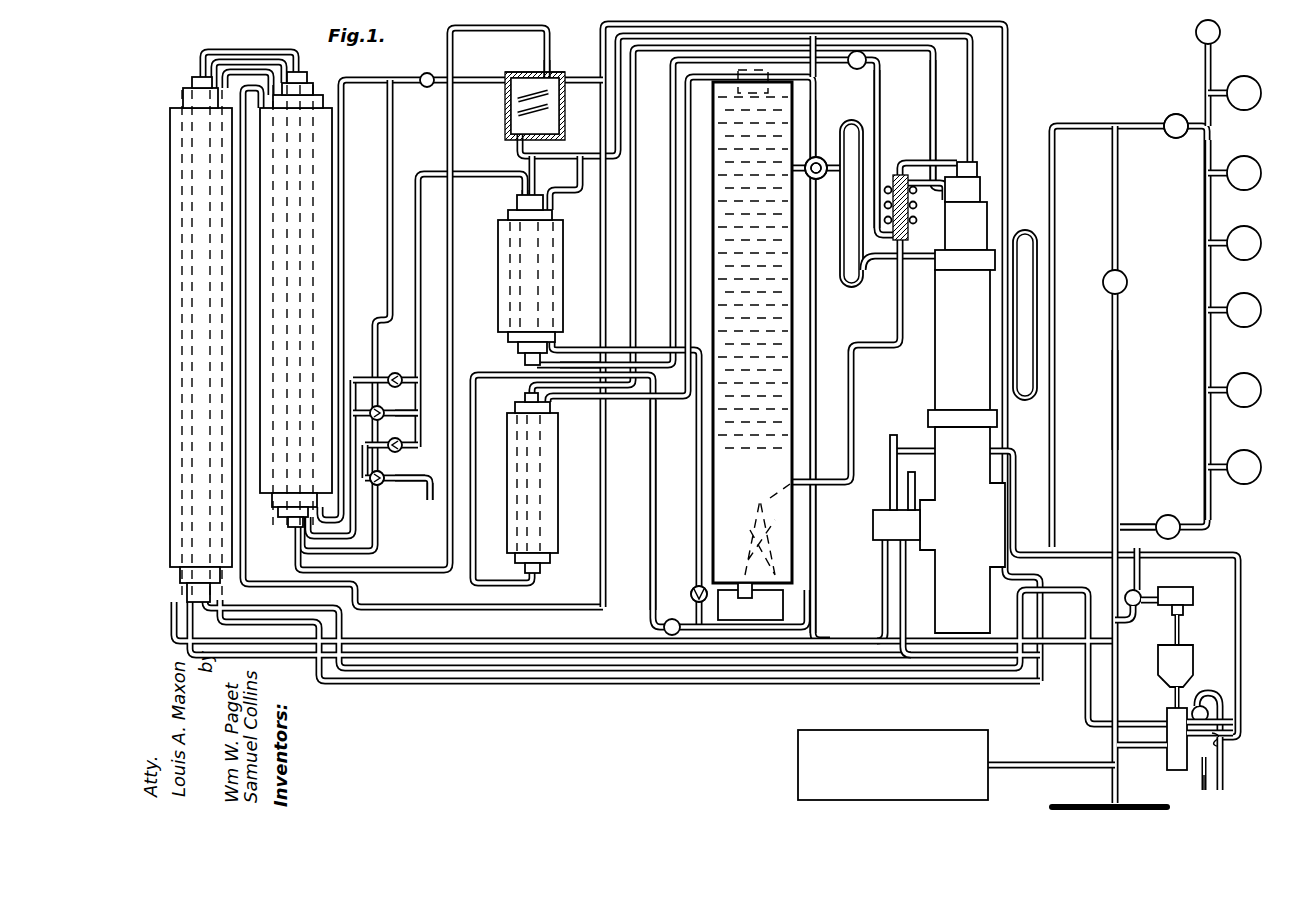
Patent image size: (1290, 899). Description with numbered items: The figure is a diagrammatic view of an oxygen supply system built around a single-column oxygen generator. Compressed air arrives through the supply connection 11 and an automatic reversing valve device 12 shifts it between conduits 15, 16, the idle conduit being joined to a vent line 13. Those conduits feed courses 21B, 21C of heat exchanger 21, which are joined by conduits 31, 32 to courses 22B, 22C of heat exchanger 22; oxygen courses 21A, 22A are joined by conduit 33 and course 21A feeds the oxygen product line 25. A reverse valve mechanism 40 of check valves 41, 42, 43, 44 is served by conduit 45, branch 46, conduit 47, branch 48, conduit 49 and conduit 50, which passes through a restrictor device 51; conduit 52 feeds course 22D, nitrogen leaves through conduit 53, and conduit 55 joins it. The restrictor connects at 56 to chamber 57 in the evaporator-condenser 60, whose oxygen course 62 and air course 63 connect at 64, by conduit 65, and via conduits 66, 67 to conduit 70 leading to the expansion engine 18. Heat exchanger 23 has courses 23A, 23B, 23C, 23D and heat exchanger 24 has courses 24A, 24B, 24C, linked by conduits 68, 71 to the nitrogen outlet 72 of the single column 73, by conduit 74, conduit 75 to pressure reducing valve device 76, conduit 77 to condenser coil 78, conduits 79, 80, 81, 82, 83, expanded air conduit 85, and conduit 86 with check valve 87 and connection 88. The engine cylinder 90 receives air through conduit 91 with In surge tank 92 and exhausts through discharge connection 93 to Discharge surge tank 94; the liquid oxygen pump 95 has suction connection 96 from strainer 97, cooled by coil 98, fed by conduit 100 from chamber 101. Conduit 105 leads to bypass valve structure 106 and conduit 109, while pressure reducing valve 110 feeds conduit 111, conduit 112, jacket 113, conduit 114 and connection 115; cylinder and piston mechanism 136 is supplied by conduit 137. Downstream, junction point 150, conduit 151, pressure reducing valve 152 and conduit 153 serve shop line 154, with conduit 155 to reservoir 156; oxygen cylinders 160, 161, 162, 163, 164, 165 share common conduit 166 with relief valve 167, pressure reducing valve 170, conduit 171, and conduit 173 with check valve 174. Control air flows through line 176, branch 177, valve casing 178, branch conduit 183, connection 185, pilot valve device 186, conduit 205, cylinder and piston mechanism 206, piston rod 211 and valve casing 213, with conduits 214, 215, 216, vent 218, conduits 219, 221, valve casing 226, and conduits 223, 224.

The supply connection 11 is at (889, 448).
The automatic reversing valve device 12 is at (870, 532).
The vent line 13 is at (907, 485).
The conduit 15 is at (882, 584).
The conduit 16 is at (905, 605).
The expansion engine 18 is at (935, 428).
The heat exchanger 21 is at (168, 341).
The oxygen product course 21A is at (208, 260).
The course 21B is at (190, 165).
The course 21C is at (180, 388).
The heat exchanger 22 is at (332, 230).
The oxygen product course 22A is at (295, 260).
The course 22B is at (312, 150).
The course 22C is at (312, 193).
The course 22D is at (322, 297).
The heat exchanger 23 is at (497, 276).
The central course 23A is at (536, 228).
The course 23B is at (518, 250).
The course 23C is at (510, 298).
The outer course 23D is at (550, 318).
The heat exchanger 24 is at (558, 533).
The central course 24A is at (540, 435).
The intermediate course 24B is at (530, 452).
The outer course 24C is at (520, 480).
The oxygen product line 25 is at (463, 683).
The conduit 31 is at (268, 68).
The conduit 32 is at (252, 64).
The conduit 33 is at (230, 45).
The reverse valve mechanism 40 is at (402, 490).
The check valve 41 is at (376, 485).
The check valve 42 is at (397, 476).
The check valve 43 is at (391, 437).
The check valve 44 is at (395, 373).
The conduit 45 is at (362, 551).
The branch 46 is at (369, 450).
The conduit 47 is at (340, 538).
The branch 48 is at (385, 404).
The conduit 49 is at (406, 410).
The conduit 50 is at (431, 485).
The restrictor device 51 is at (427, 73).
The conduit 52 is at (368, 83).
The conduit 53 is at (421, 270).
The conduit 55 is at (411, 464).
The connection 56 is at (510, 78).
The chamber 57 is at (540, 82).
The evaporator-condenser 60 is at (565, 130).
The oxygen conducting course 62 is at (516, 113).
The air conducting course 63 is at (518, 125).
The connection 64 is at (516, 99).
The conduit 65 is at (548, 45).
The conduit 66 is at (247, 570).
The conduit 67 is at (580, 77).
The conduit 68 is at (474, 375).
The conduit 70 is at (600, 42).
The conduit 71 is at (634, 398).
The nitrogen outlet 72 is at (738, 82).
The single column 73 is at (796, 332).
The conduit 74 is at (580, 188).
The conduit 75 is at (650, 504).
The pressure reducing valve device 76 is at (663, 628).
The conduit 77 is at (750, 601).
The condenser coil 78 is at (745, 540).
The conduit 79 is at (528, 185).
The conduit 80 is at (420, 573).
The conduit 81 is at (636, 296).
The conduit 82 is at (743, 616).
The conduit 83 is at (672, 216).
The expanded air conduit 85 is at (520, 200).
The conduit 86 is at (696, 452).
The check valve 87 is at (693, 588).
The connection 88 is at (692, 599).
The cylinder 90 is at (985, 230).
The conduit 91 is at (998, 262).
The In surge tank 92 is at (1036, 332).
The discharge connection 93 is at (924, 262).
The Discharge surge tank 94 is at (845, 272).
The liquid oxygen pump 95 is at (975, 162).
The suction connection 96 is at (912, 162).
The strainer 97 is at (908, 205).
The coil 98 is at (913, 224).
The conduit 100 is at (898, 342).
The condenser-unit-enclosing chamber 101 is at (795, 500).
The conduit 105 is at (834, 175).
The bypass valve structure 106 is at (830, 160).
The conduit 109 is at (806, 160).
The pressure reducing valve 110 is at (858, 52).
The conduit 111 is at (879, 108).
The conduit 112 is at (935, 180).
The jacket 113 is at (960, 190).
The conduit 114 is at (935, 115).
The connection 115 is at (800, 80).
The cylinder and piston mechanism 136 is at (818, 162).
The conduit 137 is at (816, 400).
The junction point 150 is at (1116, 125).
The conduit 151 is at (1112, 197).
The pressure reducing valve 152 is at (1125, 276).
The conduit 153 is at (1120, 400).
The shop line 154 is at (1068, 804).
The conduit 155 is at (1033, 758).
The reservoir 156 is at (905, 735).
The oxygen cylinder 160 is at (1248, 75).
The oxygen cylinder 161 is at (1248, 155).
The oxygen cylinder 162 is at (1248, 225).
The oxygen cylinder 163 is at (1248, 297).
The oxygen cylinder 164 is at (1250, 373).
The oxygen cylinder 165 is at (1248, 448).
The common conduit 166 is at (1205, 345).
The relief valve 167 is at (1196, 34).
The pressure reducing valve 170 is at (1171, 514).
The conduit 171 is at (1144, 525).
The check valve controlled conduit 173 is at (1164, 122).
The check valve 174 is at (1178, 113).
The line 176 is at (1008, 450).
The branch 177 is at (1142, 568).
The valve casing 178 is at (1127, 593).
The branch conduit 183 is at (1130, 622).
The connection 185 is at (1150, 604).
The pilot valve device 186 is at (1190, 590).
The conduit 205 is at (1182, 630).
The cylinder and piston mechanism 206 is at (1195, 650).
The piston rod 211 is at (1174, 698).
The valve casing 213 is at (1178, 770).
The conduit 214 is at (1224, 740).
The conduit 215 is at (1194, 705).
The conduit 216 is at (1212, 793).
The vent 218 is at (1224, 780).
The conduit 219 is at (1222, 721).
The conduit 221 is at (1208, 730).
The conduit 223 is at (1145, 725).
The conduit 224 is at (1147, 748).
The valve casing 226 is at (1212, 700).